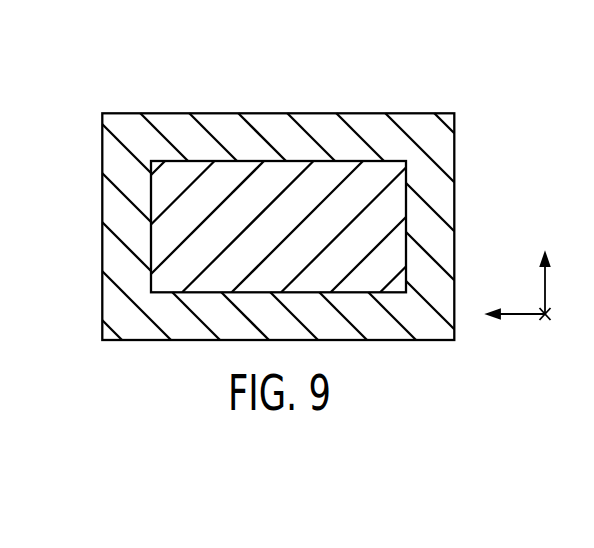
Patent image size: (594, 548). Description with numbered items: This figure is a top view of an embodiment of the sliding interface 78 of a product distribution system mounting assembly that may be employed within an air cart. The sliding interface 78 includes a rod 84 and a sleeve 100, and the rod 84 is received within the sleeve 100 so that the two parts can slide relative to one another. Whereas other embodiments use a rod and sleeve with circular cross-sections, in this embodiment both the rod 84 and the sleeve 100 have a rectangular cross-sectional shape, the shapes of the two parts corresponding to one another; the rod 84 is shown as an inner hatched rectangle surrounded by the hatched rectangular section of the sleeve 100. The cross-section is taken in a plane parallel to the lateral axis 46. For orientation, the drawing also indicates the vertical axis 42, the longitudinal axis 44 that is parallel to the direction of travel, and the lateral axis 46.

The sleeve 100 is at (370, 113).
The rod 84 is at (270, 183).
The sliding interface 78 is at (303, 240).
The vertical axis 42 is at (547, 322).
The longitudinal axis 44 is at (520, 311).
The lateral axis 46 is at (545, 292).